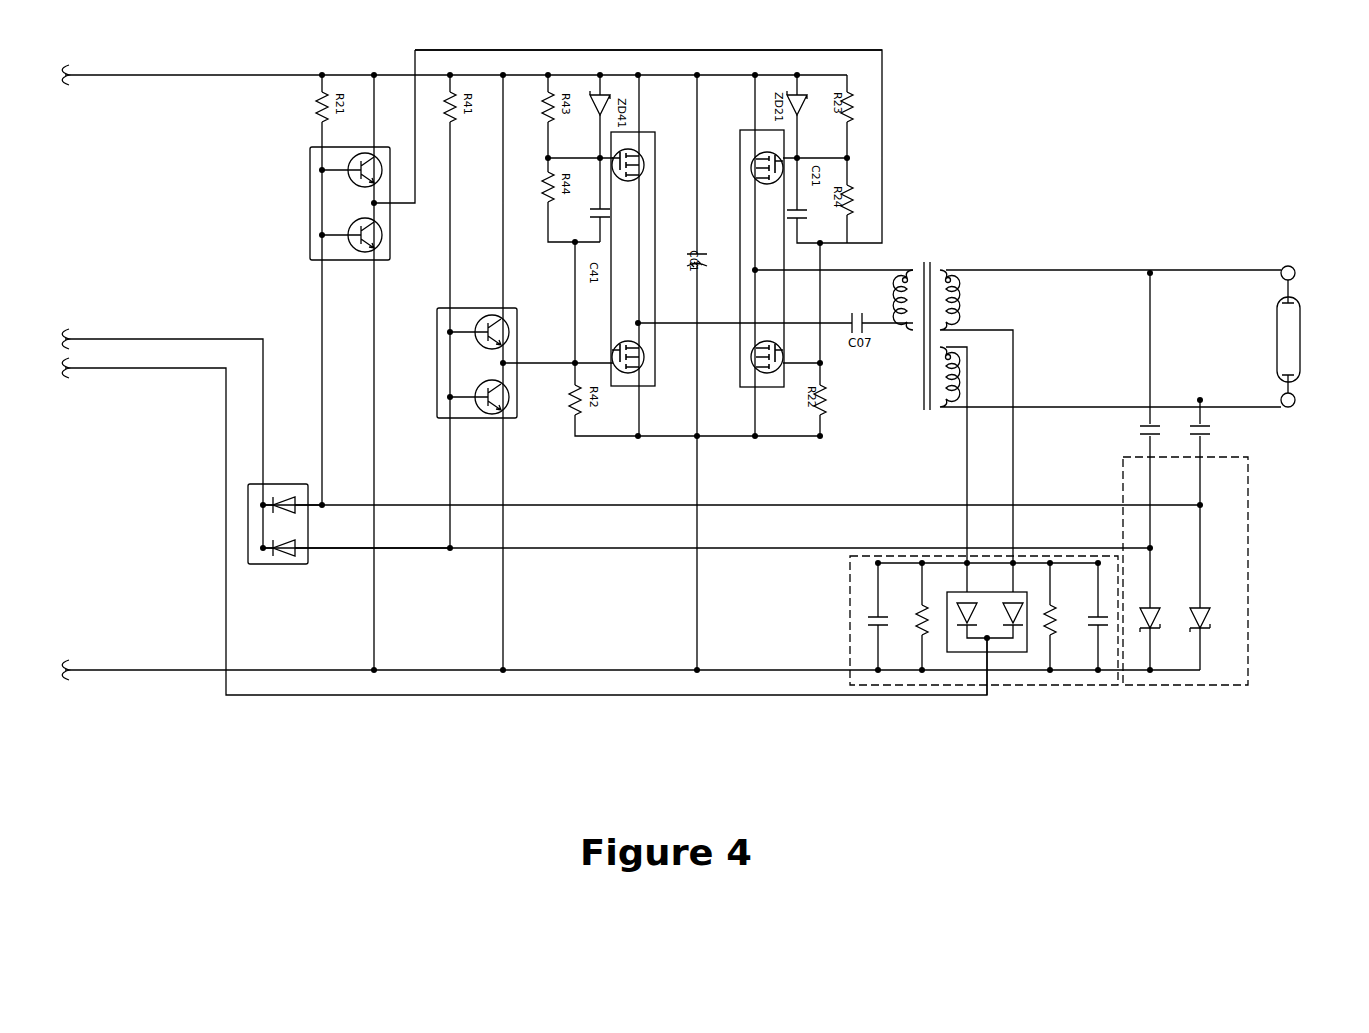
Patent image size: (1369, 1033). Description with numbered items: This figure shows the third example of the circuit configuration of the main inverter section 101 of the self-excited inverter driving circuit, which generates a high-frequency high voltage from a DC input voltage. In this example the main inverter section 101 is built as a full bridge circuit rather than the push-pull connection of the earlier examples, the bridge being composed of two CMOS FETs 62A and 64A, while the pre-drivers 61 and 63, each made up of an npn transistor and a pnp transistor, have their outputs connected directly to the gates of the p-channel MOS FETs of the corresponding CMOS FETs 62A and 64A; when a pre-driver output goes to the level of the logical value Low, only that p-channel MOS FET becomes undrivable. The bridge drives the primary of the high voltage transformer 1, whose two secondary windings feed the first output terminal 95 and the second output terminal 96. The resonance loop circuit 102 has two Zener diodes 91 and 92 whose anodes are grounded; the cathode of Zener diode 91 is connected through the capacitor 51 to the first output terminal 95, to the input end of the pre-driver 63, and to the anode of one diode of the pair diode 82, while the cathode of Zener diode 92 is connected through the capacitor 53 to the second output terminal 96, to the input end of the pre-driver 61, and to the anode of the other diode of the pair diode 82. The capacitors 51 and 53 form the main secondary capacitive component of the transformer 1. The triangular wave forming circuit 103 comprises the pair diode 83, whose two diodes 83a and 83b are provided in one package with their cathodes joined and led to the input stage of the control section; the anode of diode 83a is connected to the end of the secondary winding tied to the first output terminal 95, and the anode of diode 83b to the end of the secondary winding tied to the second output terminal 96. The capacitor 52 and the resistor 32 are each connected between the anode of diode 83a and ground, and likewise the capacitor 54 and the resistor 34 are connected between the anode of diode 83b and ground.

The main inverter section 101 is at (682, 70).
The pre-driver (Q21) 61 is at (318, 170).
The CMOS FET (Q22A) 62A is at (742, 150).
The pre-driver (Q41) 63 is at (517, 418).
The CMOS FET (Q42A) 64A is at (655, 388).
The pair diode (D02) 82 is at (308, 562).
The high voltage transformer (T1) 1 is at (918, 395).
The first output terminal (OUT1) 95 is at (1296, 278).
The second output terminal (OUT2) 96 is at (1296, 400).
The capacitor (C61) 51 is at (1140, 434).
The capacitor (C81) 53 is at (1193, 428).
The resonance loop circuit 102 is at (1200, 686).
The Zener diode (ZD61) 91 is at (1152, 624).
The Zener diode (ZD81) 92 is at (1206, 628).
The triangular wave forming circuit 103 is at (1095, 686).
The capacitor (C82) 54 is at (864, 620).
The resistor (R82) 34 is at (918, 620).
The resistor (R62) 32 is at (1053, 655).
The capacitor (C62) 52 is at (1090, 606).
The pair diode (D03) 83 is at (990, 660).
The diode 83a is at (1032, 600).
The diode 83b is at (946, 600).